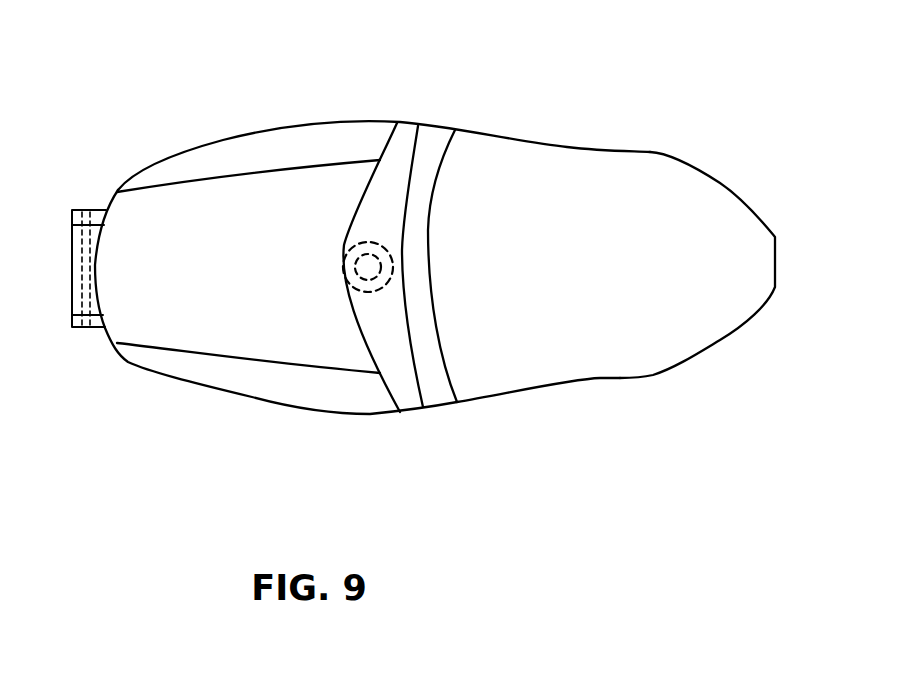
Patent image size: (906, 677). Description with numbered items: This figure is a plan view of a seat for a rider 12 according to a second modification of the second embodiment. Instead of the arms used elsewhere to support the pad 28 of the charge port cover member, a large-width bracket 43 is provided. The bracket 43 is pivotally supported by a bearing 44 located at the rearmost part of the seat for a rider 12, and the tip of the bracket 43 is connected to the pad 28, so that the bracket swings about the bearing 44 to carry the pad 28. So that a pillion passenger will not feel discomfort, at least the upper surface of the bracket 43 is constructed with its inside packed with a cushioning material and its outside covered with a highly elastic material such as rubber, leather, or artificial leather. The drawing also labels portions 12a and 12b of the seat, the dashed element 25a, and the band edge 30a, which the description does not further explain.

The seat for a rider 12 is at (197, 100).
The toe portion of shoe cover 12a is at (642, 167).
The lower side portion of shoe cover 12b is at (291, 391).
The bracket 43 is at (285, 187).
The pad 28 is at (397, 145).
The strap portion 30a is at (440, 392).
The fastener 25a is at (388, 253).
The bearing 44 is at (77, 332).